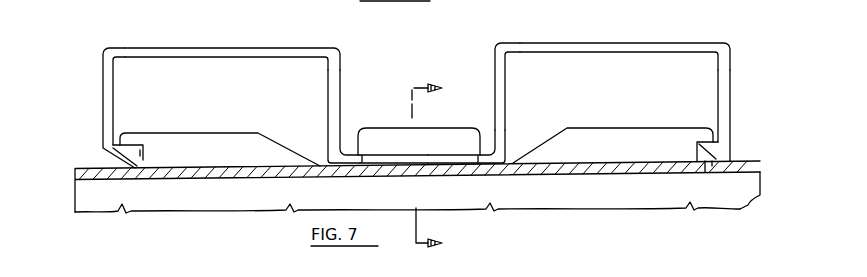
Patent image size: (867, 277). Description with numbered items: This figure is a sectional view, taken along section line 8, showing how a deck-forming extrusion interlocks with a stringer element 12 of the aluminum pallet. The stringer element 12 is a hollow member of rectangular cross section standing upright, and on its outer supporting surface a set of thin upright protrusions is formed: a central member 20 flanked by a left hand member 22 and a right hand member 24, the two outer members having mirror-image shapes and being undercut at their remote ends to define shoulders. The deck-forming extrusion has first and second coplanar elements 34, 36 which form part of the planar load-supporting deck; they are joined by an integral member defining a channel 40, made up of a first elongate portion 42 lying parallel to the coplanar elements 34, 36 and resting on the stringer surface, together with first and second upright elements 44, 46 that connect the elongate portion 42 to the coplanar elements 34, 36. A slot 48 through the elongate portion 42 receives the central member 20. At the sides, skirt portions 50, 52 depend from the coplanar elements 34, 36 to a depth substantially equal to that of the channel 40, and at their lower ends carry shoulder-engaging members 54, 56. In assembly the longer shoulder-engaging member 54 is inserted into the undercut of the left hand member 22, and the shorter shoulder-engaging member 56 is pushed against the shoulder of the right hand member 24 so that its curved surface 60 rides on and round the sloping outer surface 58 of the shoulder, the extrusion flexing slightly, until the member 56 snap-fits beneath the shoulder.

The section line 8- 8 is at (433, 171).
The stringer element 12 is at (417, 187).
The central member 20 is at (386, 140).
The left hand member 22 is at (220, 140).
The right hand member 24 is at (610, 133).
The first coplanar element 34 is at (203, 52).
The second coplanar element 36 is at (604, 46).
The channel 40 is at (415, 101).
The first elongate portion 42 is at (491, 163).
The first upright element 44 is at (342, 93).
The second upright element 46 is at (497, 90).
The slot 48 is at (366, 165).
The skirt portion 50 is at (105, 98).
The skirt portion 52 is at (730, 90).
The shoulder-engaging member 54 is at (142, 150).
The shoulder-engaging member 56 is at (713, 160).
The sloping outer surface 58 is at (717, 127).
The curved surface 60 is at (712, 165).